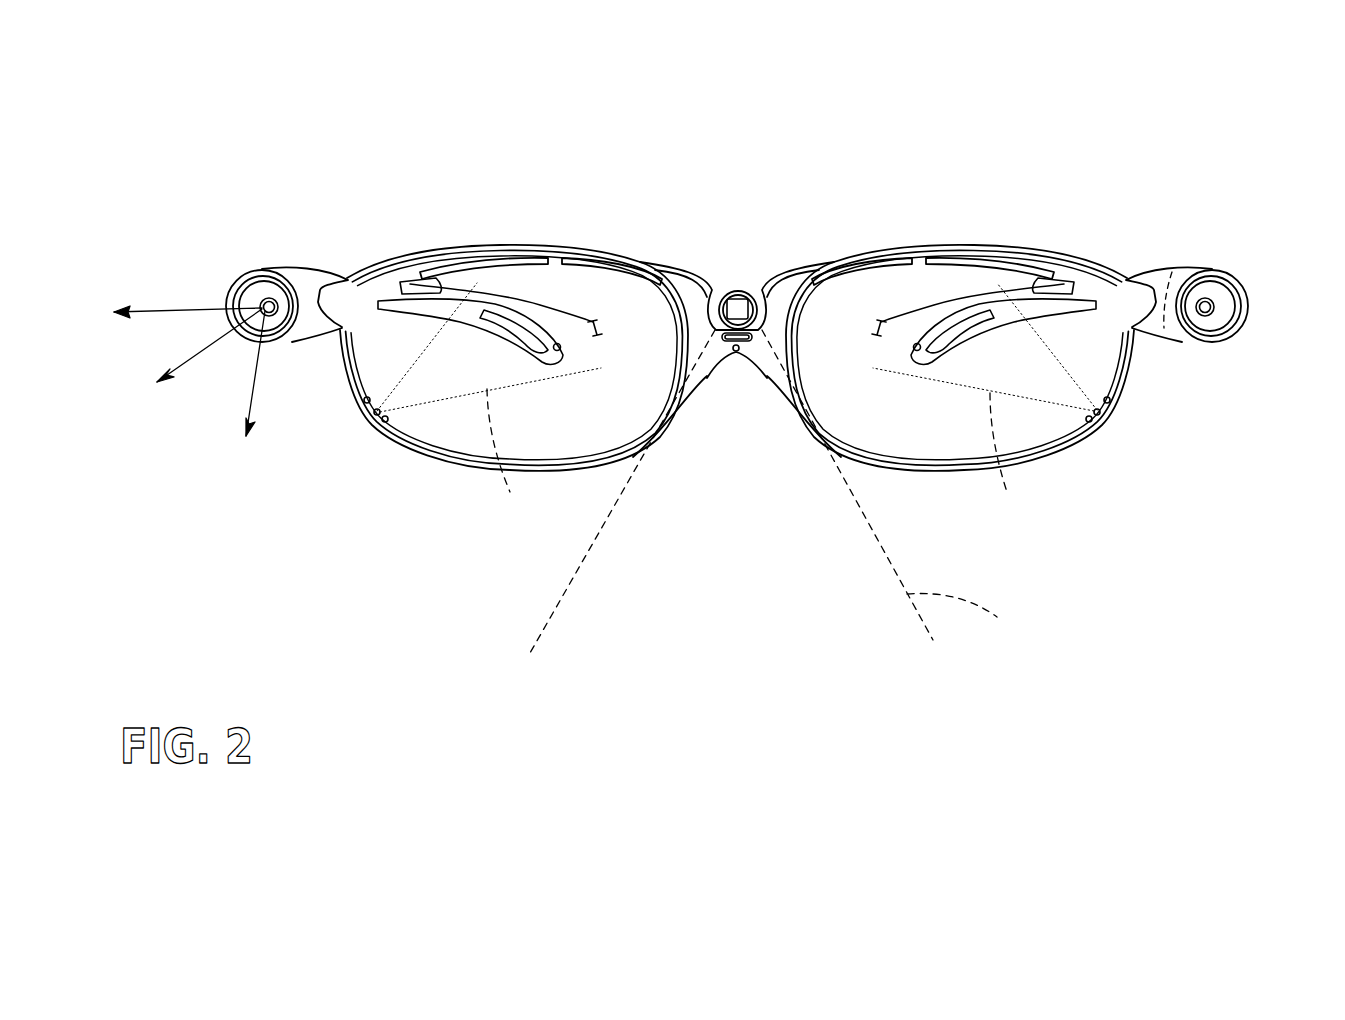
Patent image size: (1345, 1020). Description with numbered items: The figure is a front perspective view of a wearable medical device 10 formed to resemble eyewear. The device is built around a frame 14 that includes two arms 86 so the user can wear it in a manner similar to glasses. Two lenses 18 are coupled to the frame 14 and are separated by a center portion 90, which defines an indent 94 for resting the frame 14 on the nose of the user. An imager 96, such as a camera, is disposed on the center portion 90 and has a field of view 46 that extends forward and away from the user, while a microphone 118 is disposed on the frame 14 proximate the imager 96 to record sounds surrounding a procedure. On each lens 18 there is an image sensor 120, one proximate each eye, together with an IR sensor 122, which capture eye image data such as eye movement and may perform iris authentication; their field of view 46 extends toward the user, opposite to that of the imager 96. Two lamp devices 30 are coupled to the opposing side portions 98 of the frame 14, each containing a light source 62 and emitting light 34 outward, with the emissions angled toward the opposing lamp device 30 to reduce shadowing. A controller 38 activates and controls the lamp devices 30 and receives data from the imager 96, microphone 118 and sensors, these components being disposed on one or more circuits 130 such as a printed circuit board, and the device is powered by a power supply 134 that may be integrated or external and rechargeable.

The wearable medical device 10 is at (1155, 178).
The frame 14 is at (1107, 278).
The lens 18 is at (467, 440).
The lamp device 30 is at (303, 278).
The light 34 is at (184, 310).
The controller 38 is at (1175, 270).
The field of view 46 is at (774, 491).
The light source 62 is at (266, 303).
The arm 86 is at (416, 296).
The center portion 90 is at (697, 282).
The indent 94 is at (707, 380).
The imager 96 is at (744, 300).
The side portion 98 is at (335, 335).
The microphone 118 is at (736, 352).
The image sensor 120 is at (385, 422).
The IR sensor 122 is at (378, 416).
The circuit 130 is at (268, 302).
The power supply 134 is at (488, 300).